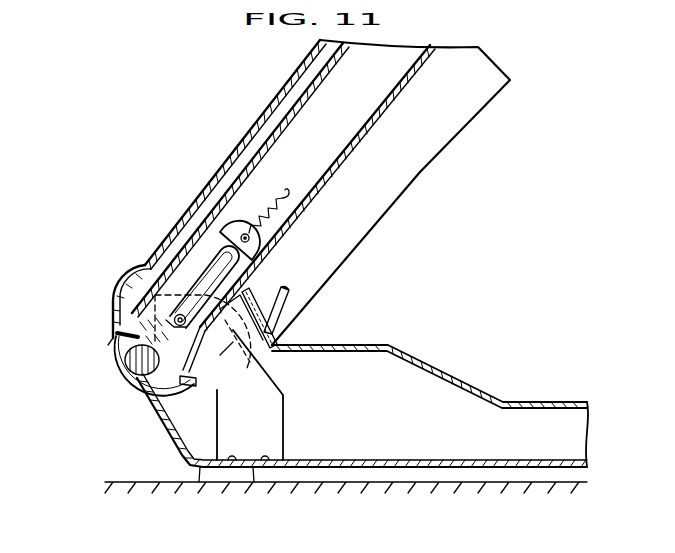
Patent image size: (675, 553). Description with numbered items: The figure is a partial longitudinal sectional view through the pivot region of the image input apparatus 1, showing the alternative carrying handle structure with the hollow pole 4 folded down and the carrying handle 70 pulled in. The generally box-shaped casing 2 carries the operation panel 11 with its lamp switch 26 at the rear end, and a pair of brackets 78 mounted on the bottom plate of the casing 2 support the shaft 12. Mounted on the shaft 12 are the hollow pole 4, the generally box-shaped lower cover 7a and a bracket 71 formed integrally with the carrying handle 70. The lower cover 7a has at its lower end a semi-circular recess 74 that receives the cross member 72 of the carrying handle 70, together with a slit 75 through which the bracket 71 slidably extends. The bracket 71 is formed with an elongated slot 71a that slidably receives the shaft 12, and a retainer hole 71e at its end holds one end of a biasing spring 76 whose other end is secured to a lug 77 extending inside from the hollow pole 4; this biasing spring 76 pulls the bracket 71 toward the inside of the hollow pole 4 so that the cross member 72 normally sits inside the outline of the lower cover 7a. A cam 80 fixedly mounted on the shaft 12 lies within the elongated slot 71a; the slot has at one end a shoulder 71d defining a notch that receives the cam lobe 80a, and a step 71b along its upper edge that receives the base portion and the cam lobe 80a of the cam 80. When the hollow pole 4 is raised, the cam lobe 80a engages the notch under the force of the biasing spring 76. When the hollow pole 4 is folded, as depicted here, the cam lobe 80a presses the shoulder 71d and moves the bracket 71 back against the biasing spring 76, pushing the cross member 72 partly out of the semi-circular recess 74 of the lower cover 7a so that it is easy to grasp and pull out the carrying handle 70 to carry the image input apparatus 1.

The image input apparatus 1 is at (462, 240).
The casing 2 is at (160, 427).
The hollow pole 4 is at (402, 97).
The lower cover 7a is at (267, 107).
The operation panel 11 is at (287, 328).
The shaft 12 is at (131, 292).
The lamp switch 26 is at (286, 291).
The carrying handle 70 is at (118, 368).
The bracket 71 is at (210, 245).
The elongated slot 71a is at (260, 268).
The step 71b is at (172, 244).
The shoulder 71d is at (188, 384).
The retainer hole 71e is at (245, 233).
The cross member 72 is at (138, 367).
The semi-circular recess 74 is at (113, 340).
The slit 75 is at (125, 342).
The biasing spring 76 is at (295, 213).
The lug 77 is at (287, 183).
The bracket 78 is at (272, 425).
The cam 80 is at (200, 347).
The cam lobe 80a is at (117, 310).